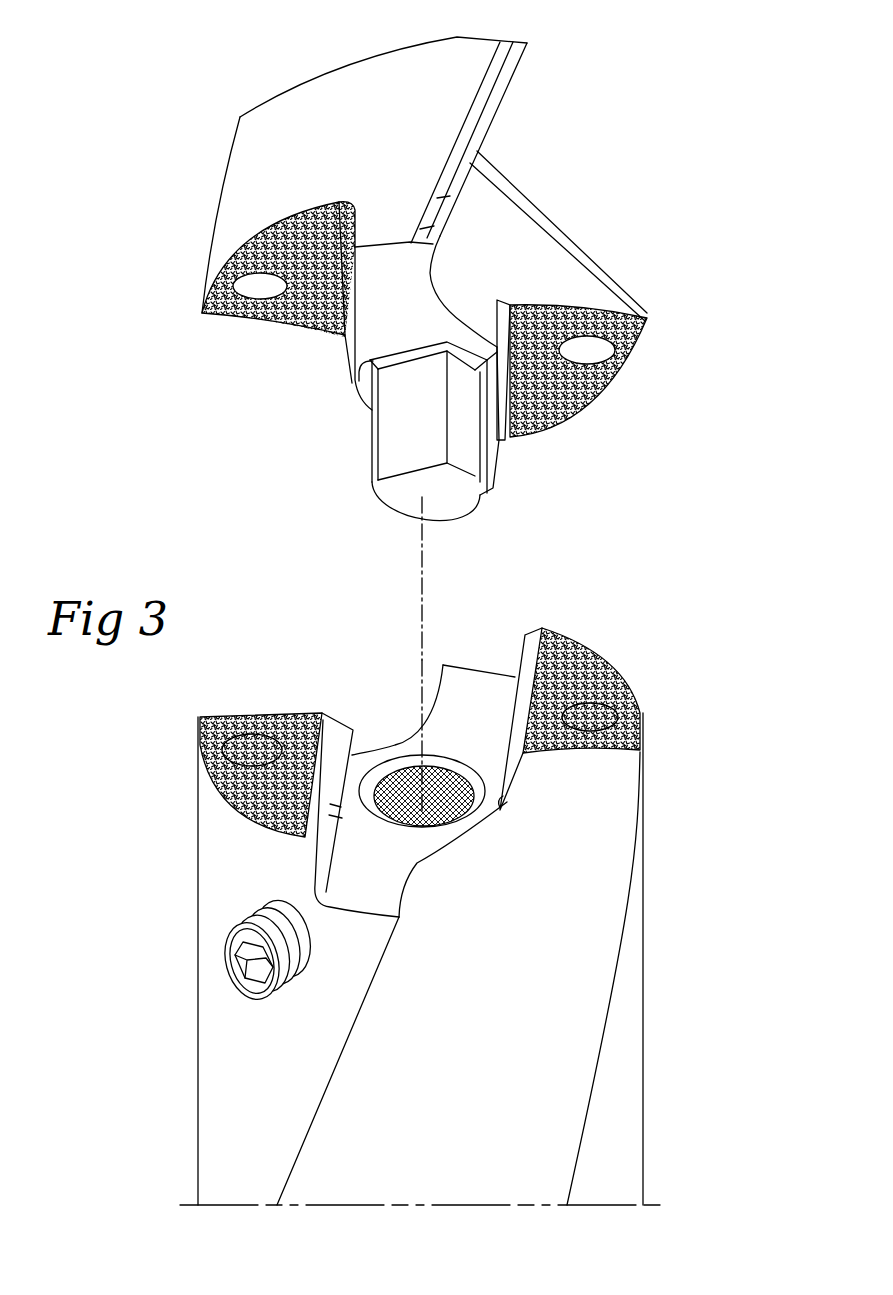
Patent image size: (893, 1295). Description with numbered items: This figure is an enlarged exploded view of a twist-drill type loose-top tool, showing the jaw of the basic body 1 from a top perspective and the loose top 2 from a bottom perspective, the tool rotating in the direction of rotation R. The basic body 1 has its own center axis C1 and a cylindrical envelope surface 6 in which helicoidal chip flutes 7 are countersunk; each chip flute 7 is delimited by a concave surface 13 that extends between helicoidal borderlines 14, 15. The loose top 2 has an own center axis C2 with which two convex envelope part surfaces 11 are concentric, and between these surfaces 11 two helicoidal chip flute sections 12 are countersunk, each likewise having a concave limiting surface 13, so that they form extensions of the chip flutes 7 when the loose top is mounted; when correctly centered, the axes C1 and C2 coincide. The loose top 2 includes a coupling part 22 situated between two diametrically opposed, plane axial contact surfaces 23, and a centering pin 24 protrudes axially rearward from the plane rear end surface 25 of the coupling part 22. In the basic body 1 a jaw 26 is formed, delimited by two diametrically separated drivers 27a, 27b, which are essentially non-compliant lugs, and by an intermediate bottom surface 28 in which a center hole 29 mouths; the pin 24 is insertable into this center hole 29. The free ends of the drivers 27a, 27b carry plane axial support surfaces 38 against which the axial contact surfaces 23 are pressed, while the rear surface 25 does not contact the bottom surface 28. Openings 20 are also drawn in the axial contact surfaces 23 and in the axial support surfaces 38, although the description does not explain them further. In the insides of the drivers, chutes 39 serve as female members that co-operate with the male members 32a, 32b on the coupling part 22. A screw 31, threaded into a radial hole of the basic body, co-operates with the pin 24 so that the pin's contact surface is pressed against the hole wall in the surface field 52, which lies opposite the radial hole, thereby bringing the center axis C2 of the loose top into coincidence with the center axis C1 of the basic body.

The basic body 1 is at (683, 798).
The loose top 2 is at (182, 199).
The cylindrical envelope surface 6 is at (226, 1161).
The chip flutes 7 is at (578, 958).
The convex envelope part surfaces 11 is at (285, 166).
The chip flute sections 12 is at (500, 198).
The concave limiting surface 13 is at (485, 254).
The helicoidal borderline 14 is at (323, 1090).
The helicoidal borderline 15 is at (592, 1093).
The coolant hole 20 is at (260, 292).
The coupling part 22 is at (352, 386).
The axial contact surfaces 23 is at (285, 259).
The centering pin 24 is at (368, 506).
The rear end surface 25 is at (378, 314).
The jaw 26 is at (498, 660).
The driver 27a is at (228, 713).
The driver 27b is at (573, 632).
The bottom surface 28 is at (452, 729).
The center hole 29 is at (390, 790).
The screw 31 is at (278, 990).
The male member 32a is at (343, 332).
The male member 32b is at (498, 463).
The axial support surfaces 38 is at (253, 806).
The chutes 39 is at (503, 808).
The surface field 52 is at (430, 809).
The center axis of the basic body C1 is at (422, 676).
The center axis of the loose top C2 is at (430, 557).
The direction of rotation R is at (298, 895).